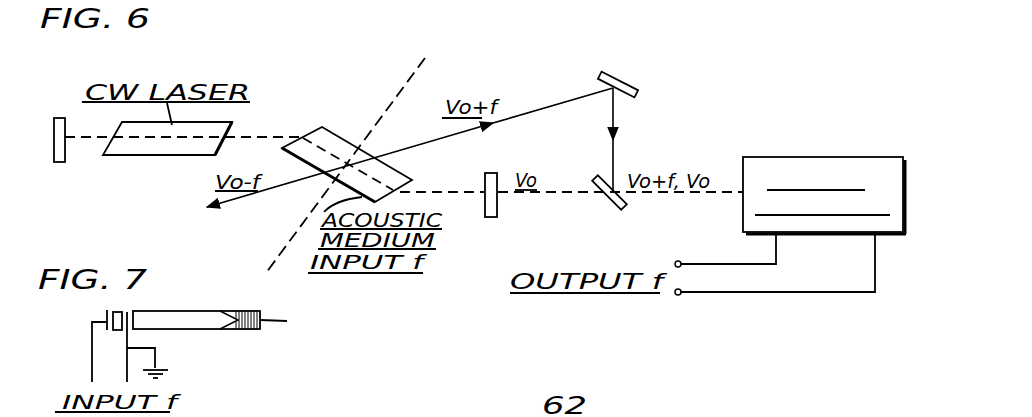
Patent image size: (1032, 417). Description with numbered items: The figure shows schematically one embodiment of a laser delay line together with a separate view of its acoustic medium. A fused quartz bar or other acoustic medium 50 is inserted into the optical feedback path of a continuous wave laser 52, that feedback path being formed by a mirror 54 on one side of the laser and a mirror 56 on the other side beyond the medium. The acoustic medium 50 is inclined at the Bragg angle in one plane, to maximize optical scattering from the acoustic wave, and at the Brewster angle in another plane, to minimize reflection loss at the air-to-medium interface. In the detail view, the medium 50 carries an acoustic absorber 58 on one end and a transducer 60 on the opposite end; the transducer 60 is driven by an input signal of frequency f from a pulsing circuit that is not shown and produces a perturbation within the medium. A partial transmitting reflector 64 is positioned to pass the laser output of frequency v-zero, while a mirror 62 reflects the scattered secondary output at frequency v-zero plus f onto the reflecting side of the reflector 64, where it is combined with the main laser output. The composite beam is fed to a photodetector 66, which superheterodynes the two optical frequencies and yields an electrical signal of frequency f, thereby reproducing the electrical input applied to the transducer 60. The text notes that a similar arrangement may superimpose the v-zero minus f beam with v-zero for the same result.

In FIG. 6, the acoustic medium 50 is at (340, 103).
In FIG. 7, the acoustic medium 50 is at (220, 329).
In FIG. 6, the continuous wave laser 52 is at (145, 152).
In FIG. 6, the mirror 54 is at (56, 163).
In FIG. 6, the mirror 56 is at (488, 217).
In FIG. 7, the acoustic absorber 58 is at (298, 324).
In FIG. 7, the transducer 60 is at (119, 313).
In FIG. 6, the mirror 62 is at (628, 88).
In FIG. 6, the partial transmitting reflector 64 is at (610, 207).
In FIG. 6, the photodetector 66 is at (815, 157).